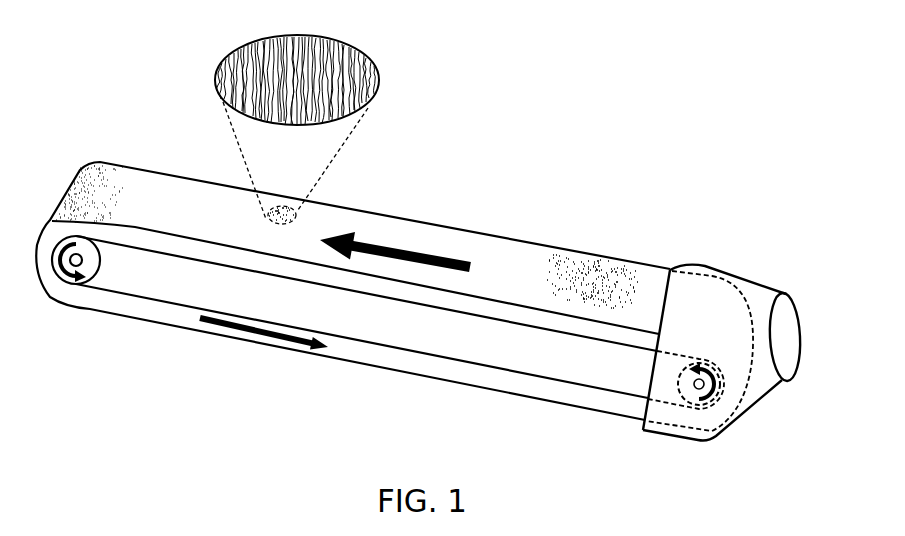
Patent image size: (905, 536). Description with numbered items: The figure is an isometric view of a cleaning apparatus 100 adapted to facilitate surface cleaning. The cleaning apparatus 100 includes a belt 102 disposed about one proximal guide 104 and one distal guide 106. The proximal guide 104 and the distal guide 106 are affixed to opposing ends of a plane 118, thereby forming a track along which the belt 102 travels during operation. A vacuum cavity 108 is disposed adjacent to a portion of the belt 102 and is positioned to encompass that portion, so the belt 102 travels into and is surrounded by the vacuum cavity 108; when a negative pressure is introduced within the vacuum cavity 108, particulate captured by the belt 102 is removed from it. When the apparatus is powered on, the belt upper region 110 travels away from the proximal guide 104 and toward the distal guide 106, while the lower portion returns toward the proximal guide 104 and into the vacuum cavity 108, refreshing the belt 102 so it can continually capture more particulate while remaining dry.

The cleaning apparatus 100 is at (545, 147).
The belt 102 is at (400, 217).
The proximal guide 104 is at (683, 357).
The distal guide 106 is at (100, 259).
The vacuum cavity 108 is at (748, 279).
The belt upper region 110 is at (530, 268).
The plane 118 is at (423, 328).